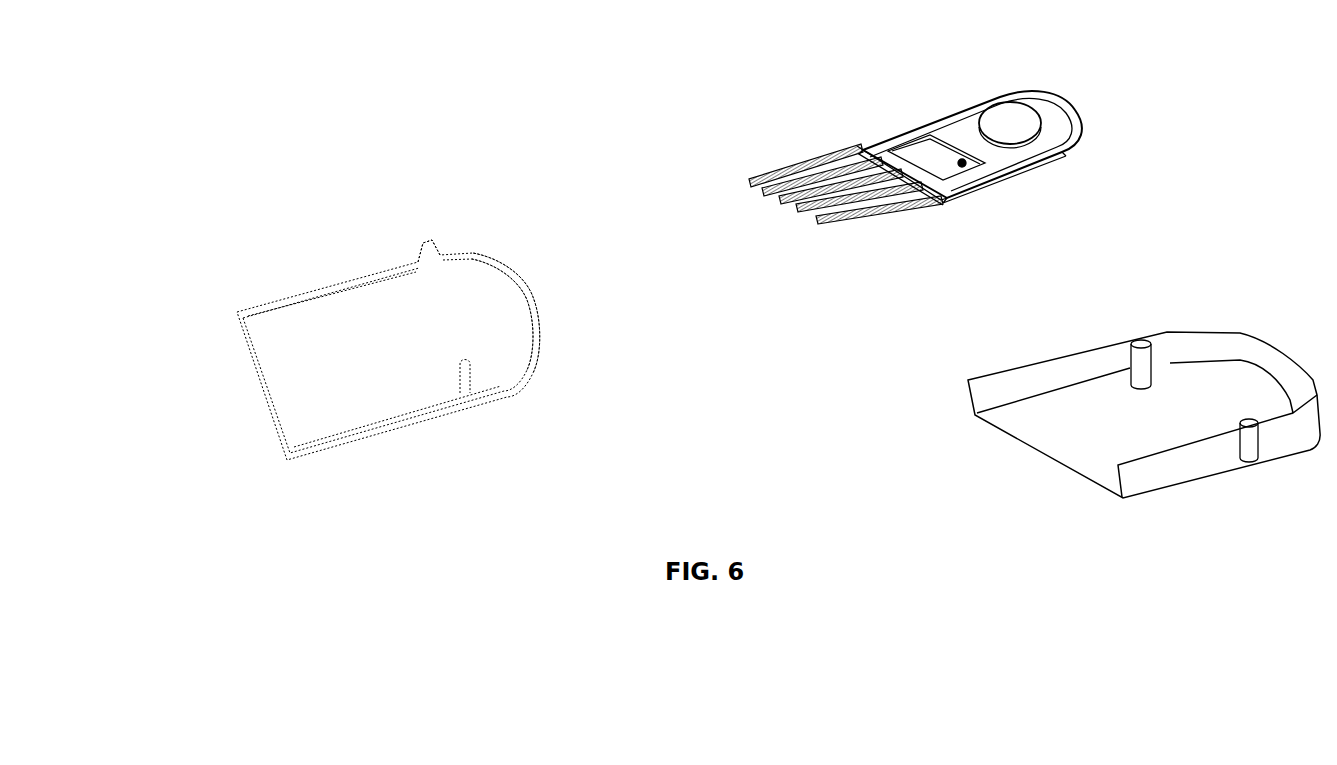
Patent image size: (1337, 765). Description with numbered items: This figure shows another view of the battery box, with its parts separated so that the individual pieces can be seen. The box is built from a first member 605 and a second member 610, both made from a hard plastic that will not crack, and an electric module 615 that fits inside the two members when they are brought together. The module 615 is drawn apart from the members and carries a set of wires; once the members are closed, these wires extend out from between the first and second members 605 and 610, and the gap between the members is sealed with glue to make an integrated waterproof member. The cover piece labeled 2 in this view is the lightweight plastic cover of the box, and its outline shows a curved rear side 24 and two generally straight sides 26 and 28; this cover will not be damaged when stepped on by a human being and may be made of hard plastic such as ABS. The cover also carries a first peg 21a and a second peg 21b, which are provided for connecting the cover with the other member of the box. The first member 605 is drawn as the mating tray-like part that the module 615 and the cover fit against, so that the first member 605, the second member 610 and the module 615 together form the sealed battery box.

The sensor housing 2 is at (292, 420).
The first peg 21a is at (422, 285).
The second peg 21b is at (463, 380).
The curved rear side 24 is at (542, 312).
The generally straight side 26 is at (345, 313).
The generally straight side 28 is at (383, 418).
The second member 610 is at (513, 332).
The module 615 is at (962, 130).
The first member 605 is at (1197, 400).